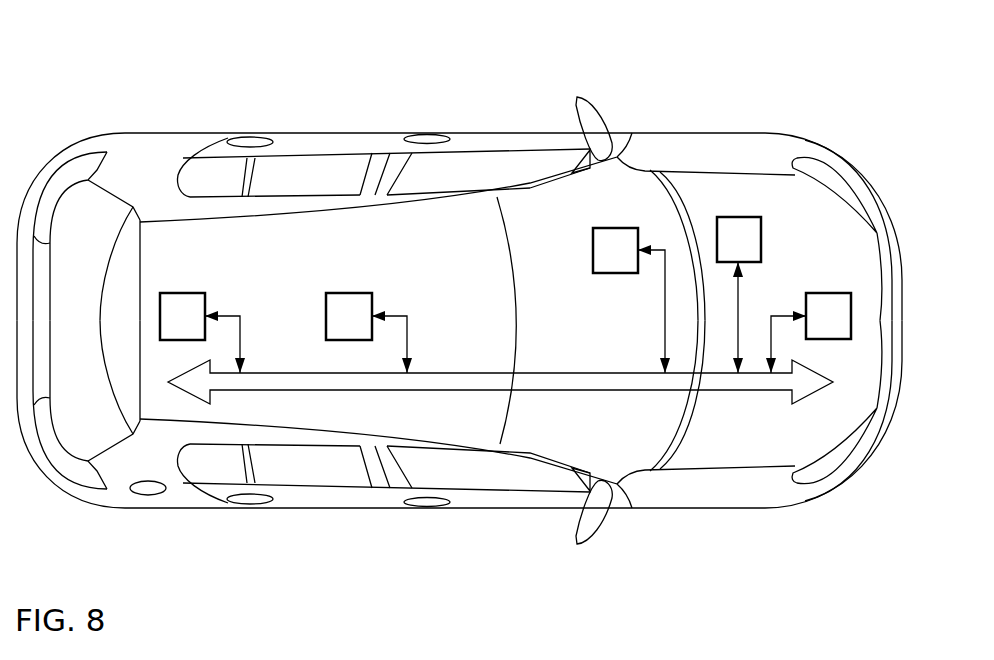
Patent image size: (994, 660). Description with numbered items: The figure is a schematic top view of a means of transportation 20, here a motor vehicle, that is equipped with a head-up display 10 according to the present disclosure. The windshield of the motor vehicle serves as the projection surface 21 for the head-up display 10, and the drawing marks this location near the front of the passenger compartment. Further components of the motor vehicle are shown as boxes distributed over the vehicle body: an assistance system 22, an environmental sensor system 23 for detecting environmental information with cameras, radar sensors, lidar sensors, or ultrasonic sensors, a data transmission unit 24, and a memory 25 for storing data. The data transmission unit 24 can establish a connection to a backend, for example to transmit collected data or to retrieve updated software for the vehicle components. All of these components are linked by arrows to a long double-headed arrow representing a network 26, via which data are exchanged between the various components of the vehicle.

The head-up display 10 is at (593, 252).
The means of transportation 20 is at (756, 132).
The projection surface 21 is at (568, 186).
The assistance system 22 is at (737, 217).
The environmental sensor system 23 is at (830, 293).
The data transmission unit 24 is at (180, 293).
The memory 25 is at (346, 293).
The network 26 is at (343, 390).